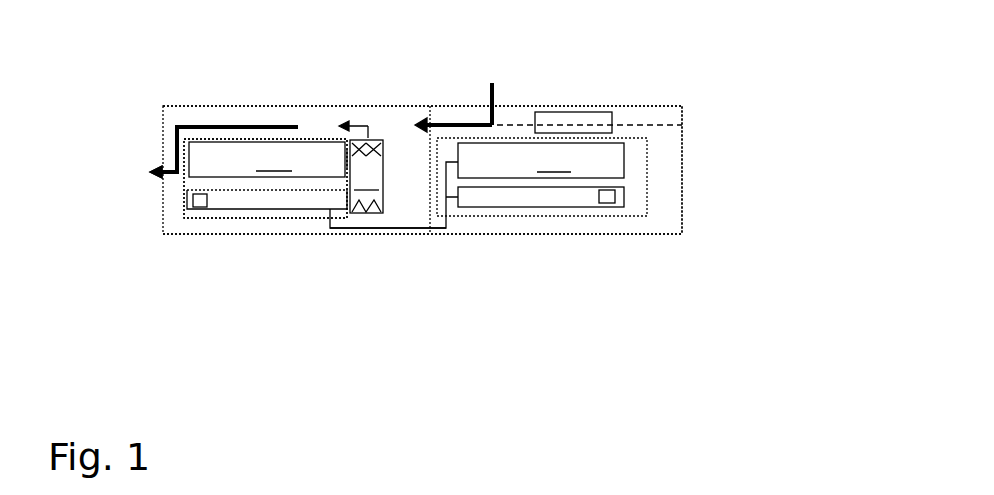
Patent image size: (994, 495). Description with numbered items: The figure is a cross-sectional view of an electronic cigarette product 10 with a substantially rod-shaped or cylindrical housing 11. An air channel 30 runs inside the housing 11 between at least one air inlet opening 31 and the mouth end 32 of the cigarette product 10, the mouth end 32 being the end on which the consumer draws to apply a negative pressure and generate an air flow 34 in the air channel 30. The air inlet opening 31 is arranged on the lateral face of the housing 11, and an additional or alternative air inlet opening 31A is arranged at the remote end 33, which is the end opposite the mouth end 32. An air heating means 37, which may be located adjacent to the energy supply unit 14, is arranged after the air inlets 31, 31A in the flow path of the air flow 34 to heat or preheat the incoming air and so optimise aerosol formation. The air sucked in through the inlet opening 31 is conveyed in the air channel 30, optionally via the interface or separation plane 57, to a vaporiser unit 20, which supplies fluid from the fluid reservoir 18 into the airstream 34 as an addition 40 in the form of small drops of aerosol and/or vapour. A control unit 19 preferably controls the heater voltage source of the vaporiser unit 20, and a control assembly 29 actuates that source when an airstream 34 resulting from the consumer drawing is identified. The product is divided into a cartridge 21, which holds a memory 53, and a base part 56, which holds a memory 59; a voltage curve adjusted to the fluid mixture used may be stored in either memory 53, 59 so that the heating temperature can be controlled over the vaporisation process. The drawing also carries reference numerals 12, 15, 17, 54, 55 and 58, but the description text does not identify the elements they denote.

The electronic cigarette product 10 is at (580, 244).
The housing 11 is at (522, 233).
The second module 12 is at (627, 217).
The energy supply unit 14 is at (541, 160).
The circuit board 15 is at (492, 197).
The first module 17 is at (264, 219).
The fluid reservoir 18 is at (268, 159).
The control unit 19 is at (230, 200).
The vaporiser unit 20 is at (366, 176).
The cartridge 21 is at (265, 178).
The control assembly 29 is at (295, 202).
The air channel 30 is at (405, 123).
The air inlet opening 31 is at (495, 102).
The air inlet opening 31A is at (682, 122).
The mouth end 32 is at (163, 137).
The remote end 33 is at (683, 183).
The air flow 34 is at (237, 127).
The air heating means 37 is at (587, 112).
The addition 40 is at (363, 120).
The memory 53 is at (193, 202).
The data line 54 is at (380, 232).
The connecting line 55 is at (427, 225).
The base part 56 is at (645, 103).
The interface or separation plane 57 is at (428, 173).
The signal line 58 is at (200, 106).
The memory 59 is at (617, 202).